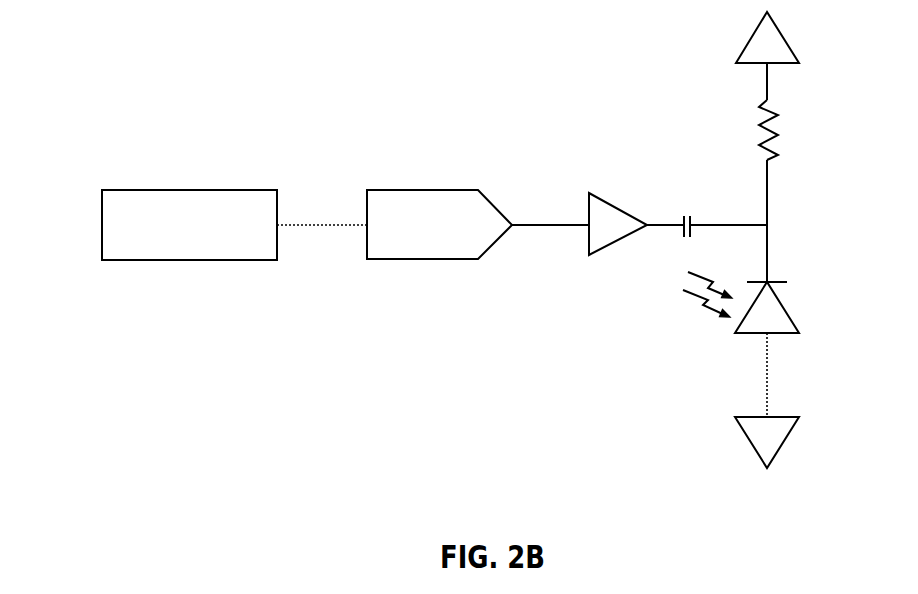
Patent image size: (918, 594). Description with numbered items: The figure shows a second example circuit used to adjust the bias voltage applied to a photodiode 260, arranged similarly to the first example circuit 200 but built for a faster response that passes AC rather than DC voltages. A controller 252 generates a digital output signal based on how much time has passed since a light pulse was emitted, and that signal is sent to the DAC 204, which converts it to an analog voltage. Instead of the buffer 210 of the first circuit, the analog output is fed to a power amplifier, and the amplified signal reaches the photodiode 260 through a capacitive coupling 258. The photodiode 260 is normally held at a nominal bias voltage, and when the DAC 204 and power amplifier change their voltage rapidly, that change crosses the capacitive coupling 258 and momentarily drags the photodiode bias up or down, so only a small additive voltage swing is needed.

The first example circuit 200 is at (137, 128).
The controller 252 is at (172, 190).
The digital to analog converter (DAC) 204 is at (398, 190).
The buffer 210 is at (609, 203).
The capacitive coupling 258 is at (693, 222).
The photodiode 260 is at (788, 266).